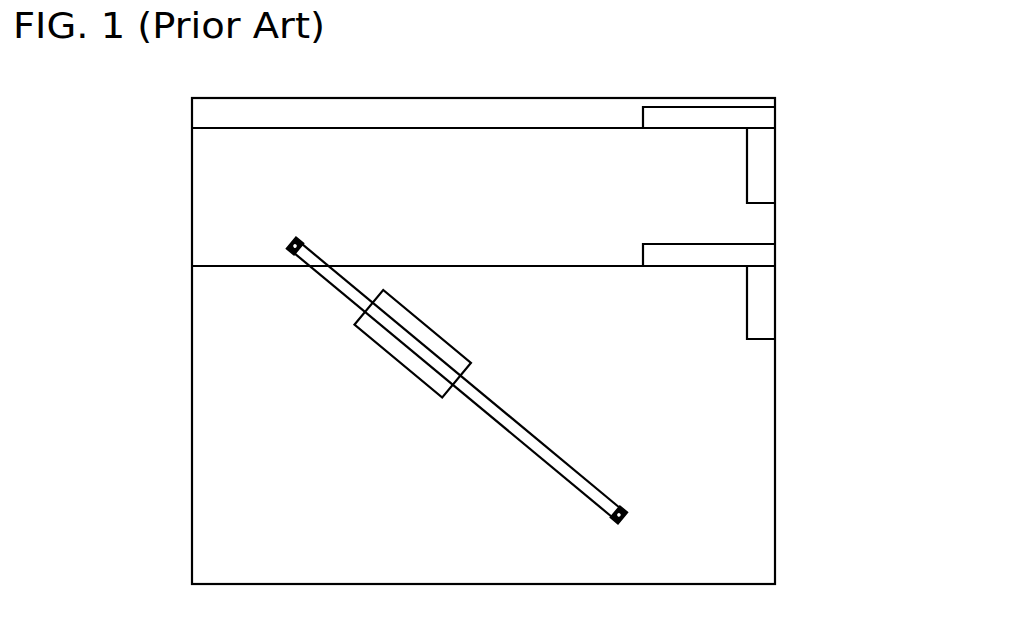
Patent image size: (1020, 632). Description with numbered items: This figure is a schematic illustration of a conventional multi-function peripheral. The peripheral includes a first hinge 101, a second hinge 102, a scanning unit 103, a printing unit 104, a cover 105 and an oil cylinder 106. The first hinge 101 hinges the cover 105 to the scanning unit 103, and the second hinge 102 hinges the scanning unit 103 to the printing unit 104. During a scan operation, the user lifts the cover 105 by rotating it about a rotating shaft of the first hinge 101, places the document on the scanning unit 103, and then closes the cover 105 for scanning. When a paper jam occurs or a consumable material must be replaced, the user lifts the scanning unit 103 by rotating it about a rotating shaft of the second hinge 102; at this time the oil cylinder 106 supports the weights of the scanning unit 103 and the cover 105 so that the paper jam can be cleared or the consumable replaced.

The first hinge 101 is at (767, 160).
The second hinge 102 is at (762, 303).
The scanning unit 103 is at (200, 209).
The printing unit 104 is at (203, 382).
The cover 105 is at (203, 116).
The oil cylinder 106 is at (396, 337).